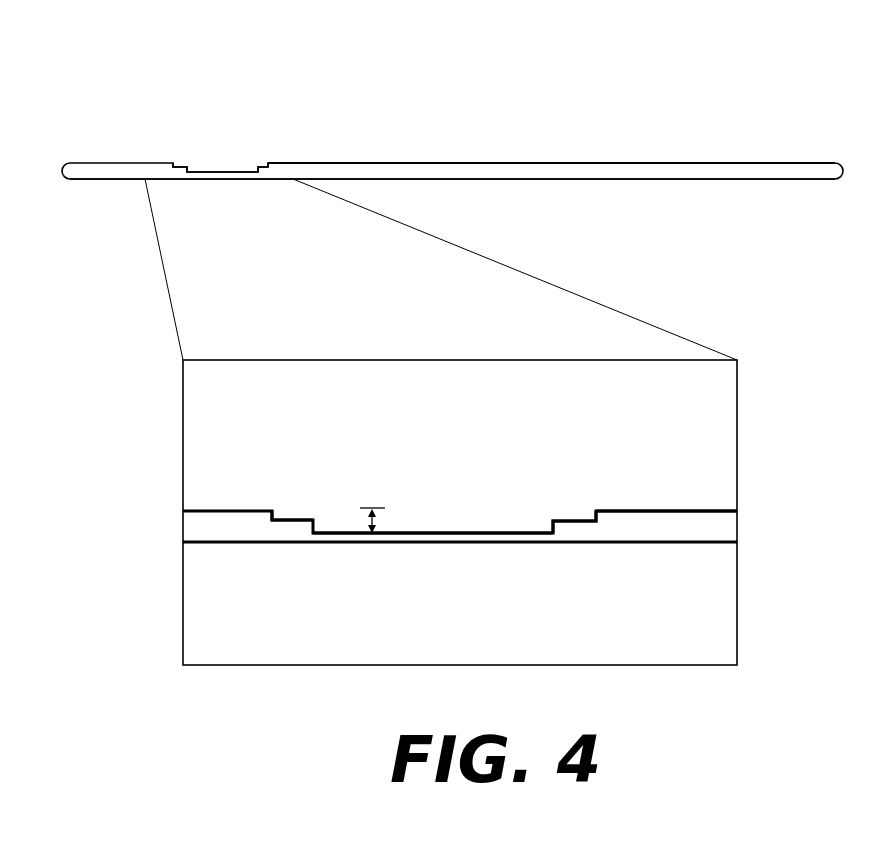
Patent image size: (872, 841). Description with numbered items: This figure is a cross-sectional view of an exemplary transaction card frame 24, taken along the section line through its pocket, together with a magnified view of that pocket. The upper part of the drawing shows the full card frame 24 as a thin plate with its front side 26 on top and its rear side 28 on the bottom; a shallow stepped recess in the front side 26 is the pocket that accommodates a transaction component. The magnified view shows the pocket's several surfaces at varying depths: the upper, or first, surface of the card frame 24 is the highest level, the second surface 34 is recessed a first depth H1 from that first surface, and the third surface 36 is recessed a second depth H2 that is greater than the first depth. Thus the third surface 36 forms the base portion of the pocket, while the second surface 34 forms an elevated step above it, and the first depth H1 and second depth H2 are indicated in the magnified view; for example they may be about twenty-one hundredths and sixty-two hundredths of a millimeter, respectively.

The card frame 24 is at (460, 70).
The front side 26 is at (806, 163).
The rear side 28 is at (762, 180).
The second surface 34 is at (568, 520).
The third surface 36 is at (438, 532).
The first depth H1 is at (288, 506).
The second depth H2 is at (398, 500).